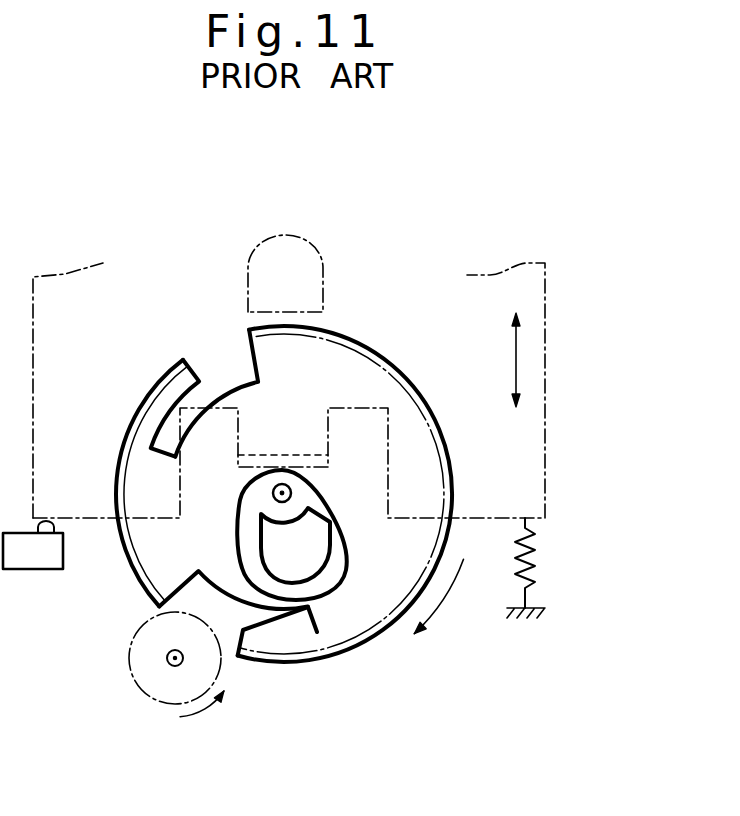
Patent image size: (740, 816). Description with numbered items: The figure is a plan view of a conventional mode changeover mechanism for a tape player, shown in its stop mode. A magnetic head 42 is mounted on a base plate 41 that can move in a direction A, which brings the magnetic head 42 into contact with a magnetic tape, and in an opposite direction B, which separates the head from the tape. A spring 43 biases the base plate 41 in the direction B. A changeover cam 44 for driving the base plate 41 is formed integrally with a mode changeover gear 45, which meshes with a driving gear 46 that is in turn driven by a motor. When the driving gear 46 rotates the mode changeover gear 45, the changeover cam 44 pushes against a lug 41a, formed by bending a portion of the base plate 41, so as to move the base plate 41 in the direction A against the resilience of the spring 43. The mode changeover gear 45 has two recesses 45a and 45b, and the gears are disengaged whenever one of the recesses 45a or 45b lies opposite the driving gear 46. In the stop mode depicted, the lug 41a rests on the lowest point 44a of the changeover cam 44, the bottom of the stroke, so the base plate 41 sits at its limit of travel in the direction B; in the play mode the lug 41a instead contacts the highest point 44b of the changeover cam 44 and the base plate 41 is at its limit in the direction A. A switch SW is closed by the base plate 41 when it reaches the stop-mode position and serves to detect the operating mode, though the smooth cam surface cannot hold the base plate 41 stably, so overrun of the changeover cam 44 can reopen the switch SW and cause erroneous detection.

The base plate 41 is at (528, 484).
The lug 41a is at (243, 470).
The magnetic head 42 is at (317, 258).
The spring 43 is at (537, 572).
The changeover cam 44 is at (335, 538).
The lowest point of changeover cam 44a is at (282, 470).
The highest point of changeover cam 44b is at (340, 588).
The mode changeover gear 45 is at (365, 612).
The recess 45a is at (225, 612).
The recess 45b is at (223, 377).
The driving gear 46 is at (152, 683).
The switch SW is at (33, 558).
The direction A is at (515, 344).
The direction B is at (515, 427).